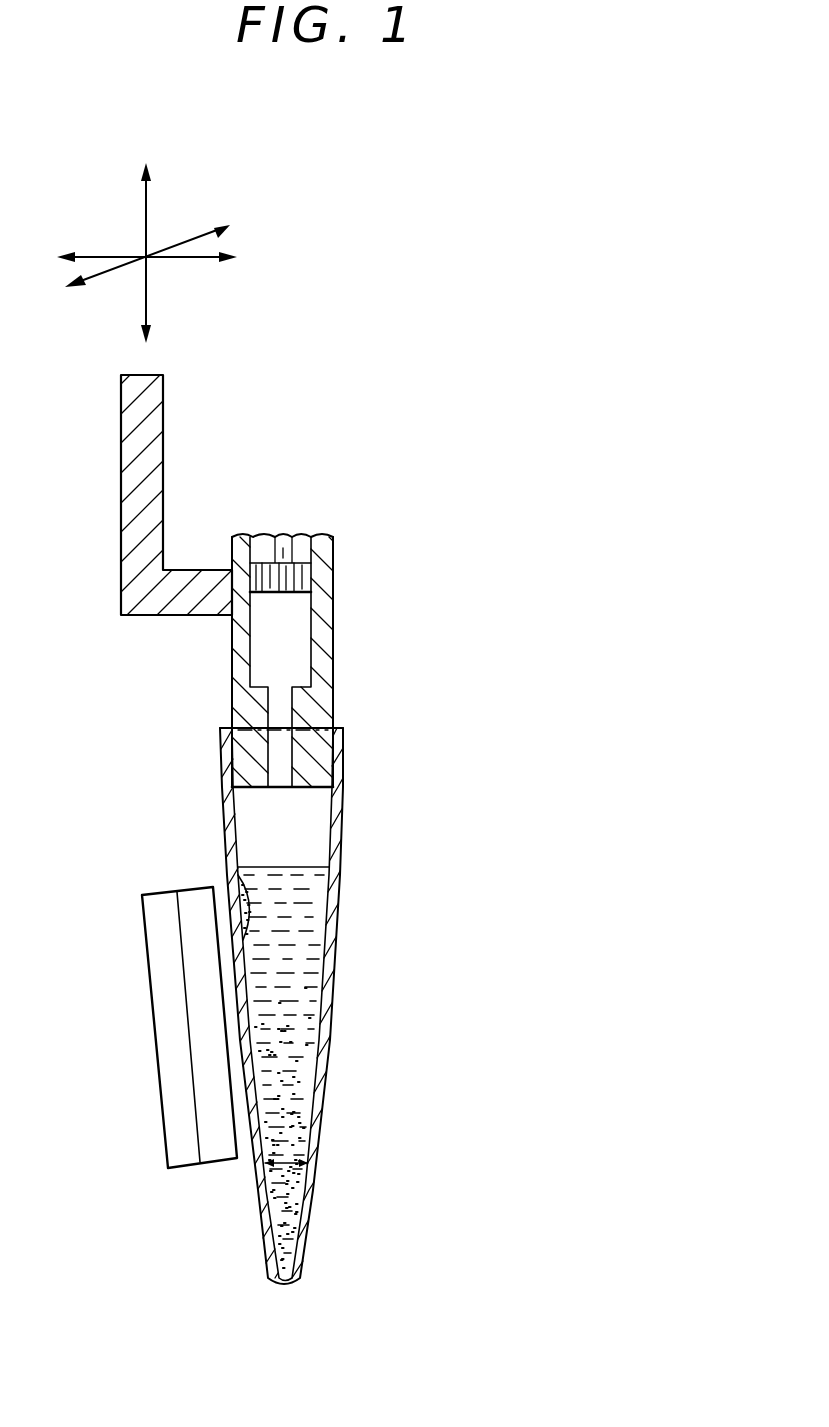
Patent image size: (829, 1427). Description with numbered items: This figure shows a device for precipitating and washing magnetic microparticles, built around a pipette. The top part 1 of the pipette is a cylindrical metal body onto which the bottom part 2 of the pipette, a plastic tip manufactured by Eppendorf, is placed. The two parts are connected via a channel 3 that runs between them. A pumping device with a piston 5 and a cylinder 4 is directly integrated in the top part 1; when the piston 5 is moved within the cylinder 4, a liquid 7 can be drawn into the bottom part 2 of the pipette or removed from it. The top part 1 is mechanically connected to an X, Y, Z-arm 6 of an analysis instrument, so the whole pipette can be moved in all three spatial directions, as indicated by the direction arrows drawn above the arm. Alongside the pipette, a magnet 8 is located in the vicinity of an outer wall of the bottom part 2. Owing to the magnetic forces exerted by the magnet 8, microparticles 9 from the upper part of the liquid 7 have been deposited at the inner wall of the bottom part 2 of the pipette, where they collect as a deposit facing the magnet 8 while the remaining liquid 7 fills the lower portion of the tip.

The top part of the pipette 1 is at (333, 672).
The bottom part of the pipette 2 is at (328, 1000).
The channel 3 is at (283, 712).
The cylinder 4 is at (292, 637).
The piston 5 is at (305, 575).
The X, Y, Z-arm 6 is at (122, 428).
The liquid 7 is at (300, 932).
The magnet 8 is at (165, 1037).
The microparticles 9 is at (232, 878).